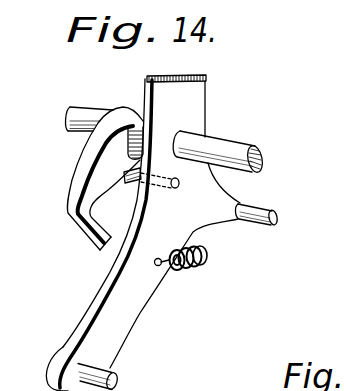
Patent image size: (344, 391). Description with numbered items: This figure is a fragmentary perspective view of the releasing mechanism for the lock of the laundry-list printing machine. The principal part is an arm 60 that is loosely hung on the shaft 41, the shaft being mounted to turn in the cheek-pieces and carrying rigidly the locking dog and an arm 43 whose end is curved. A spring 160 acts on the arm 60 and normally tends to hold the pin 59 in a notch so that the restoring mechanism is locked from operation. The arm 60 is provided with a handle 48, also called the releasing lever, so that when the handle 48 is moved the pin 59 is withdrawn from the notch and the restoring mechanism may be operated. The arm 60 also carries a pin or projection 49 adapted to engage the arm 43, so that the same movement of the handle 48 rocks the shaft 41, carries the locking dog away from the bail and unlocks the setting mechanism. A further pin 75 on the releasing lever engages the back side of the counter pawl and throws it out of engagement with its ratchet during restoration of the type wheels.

The shaft 41 is at (252, 146).
The arm 43 is at (100, 157).
The handle 48 is at (190, 100).
The pin or projection 49 is at (130, 176).
The pin 59 is at (114, 375).
The arm 60 is at (118, 295).
The pin 75 is at (281, 212).
The spring 160 is at (190, 268).